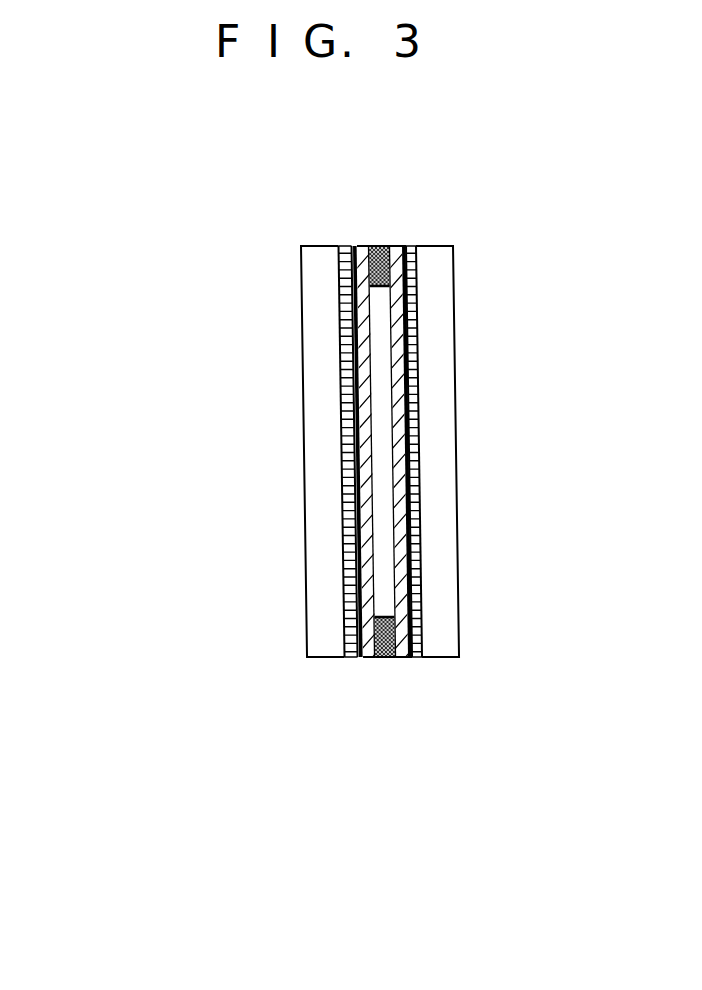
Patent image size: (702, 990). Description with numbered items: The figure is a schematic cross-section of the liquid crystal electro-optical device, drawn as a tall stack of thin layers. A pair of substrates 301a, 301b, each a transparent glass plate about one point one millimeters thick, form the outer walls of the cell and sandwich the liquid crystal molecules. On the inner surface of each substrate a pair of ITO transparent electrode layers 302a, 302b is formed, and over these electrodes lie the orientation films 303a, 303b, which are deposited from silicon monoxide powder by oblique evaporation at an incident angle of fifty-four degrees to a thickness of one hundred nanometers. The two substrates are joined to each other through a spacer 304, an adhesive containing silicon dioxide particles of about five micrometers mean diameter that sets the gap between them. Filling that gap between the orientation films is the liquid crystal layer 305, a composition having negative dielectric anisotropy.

The substrate 301a is at (300, 248).
The substrate 301b is at (453, 248).
The ITO transparent electrode layer 302a is at (342, 658).
The ITO transparent electrode layer 302b is at (423, 658).
The orientation film 303a is at (363, 658).
The orientation film 303b is at (403, 658).
The spacer 304 is at (348, 281).
The liquid crystal layer 305 is at (345, 605).